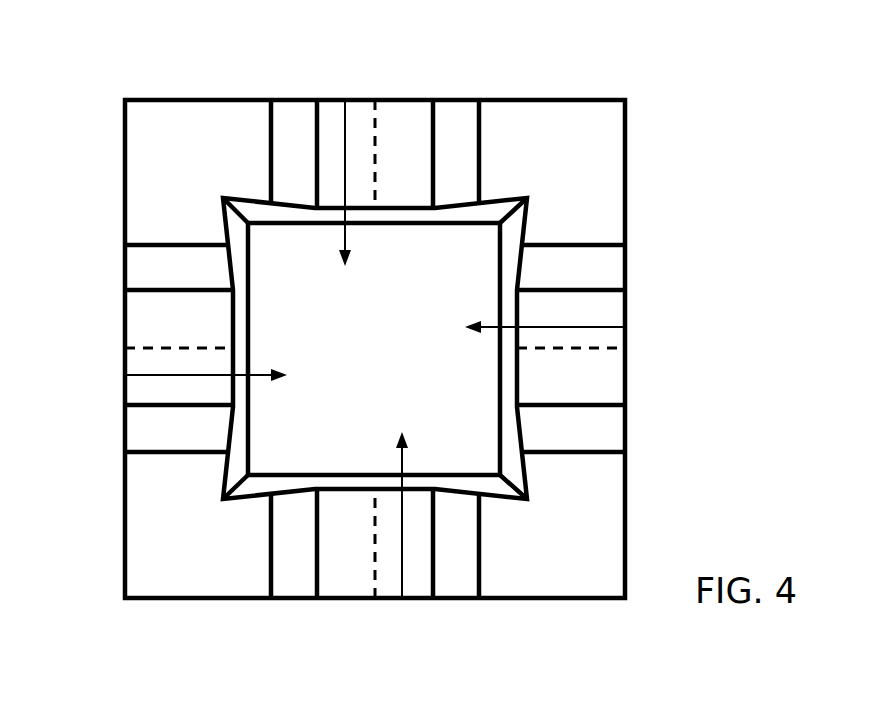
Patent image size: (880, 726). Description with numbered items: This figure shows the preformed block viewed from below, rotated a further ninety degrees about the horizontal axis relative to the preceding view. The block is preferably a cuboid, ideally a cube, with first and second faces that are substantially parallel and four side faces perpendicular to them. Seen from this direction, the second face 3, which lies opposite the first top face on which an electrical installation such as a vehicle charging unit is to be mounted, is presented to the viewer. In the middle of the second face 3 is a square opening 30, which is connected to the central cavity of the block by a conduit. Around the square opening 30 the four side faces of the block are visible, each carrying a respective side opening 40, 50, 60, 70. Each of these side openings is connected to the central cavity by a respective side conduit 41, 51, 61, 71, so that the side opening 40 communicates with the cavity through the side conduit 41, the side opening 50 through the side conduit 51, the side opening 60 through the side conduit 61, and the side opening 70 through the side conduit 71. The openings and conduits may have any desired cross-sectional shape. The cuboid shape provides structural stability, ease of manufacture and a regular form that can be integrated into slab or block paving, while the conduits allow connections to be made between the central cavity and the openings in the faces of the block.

The second face 3 is at (588, 142).
The square opening 30 is at (240, 202).
The side opening 40 is at (352, 600).
The side conduit 41 is at (406, 534).
The side opening 50 is at (123, 334).
The side conduit 51 is at (188, 375).
The side opening 60 is at (405, 98).
The side conduit 61 is at (351, 164).
The side opening 70 is at (627, 282).
The side conduit 71 is at (568, 329).